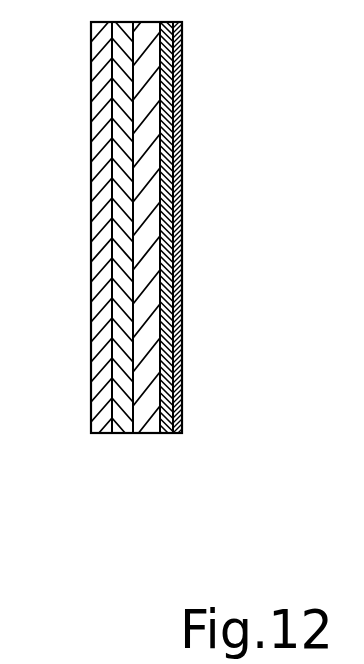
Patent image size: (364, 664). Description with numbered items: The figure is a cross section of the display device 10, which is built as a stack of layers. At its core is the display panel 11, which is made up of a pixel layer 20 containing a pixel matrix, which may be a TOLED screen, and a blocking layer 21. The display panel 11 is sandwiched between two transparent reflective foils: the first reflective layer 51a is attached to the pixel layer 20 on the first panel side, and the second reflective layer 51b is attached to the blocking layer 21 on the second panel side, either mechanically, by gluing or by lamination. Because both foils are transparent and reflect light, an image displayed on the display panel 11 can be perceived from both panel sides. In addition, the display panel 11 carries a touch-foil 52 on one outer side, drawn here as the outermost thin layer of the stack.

The display device 10 is at (175, 296).
The display panel 11 is at (130, 445).
The pixel layer 20 is at (143, 433).
The blocking layer 21 is at (120, 433).
The first reflective layer 51a is at (167, 433).
The second reflective layer 51b is at (100, 433).
The touch-foil 52 is at (183, 390).